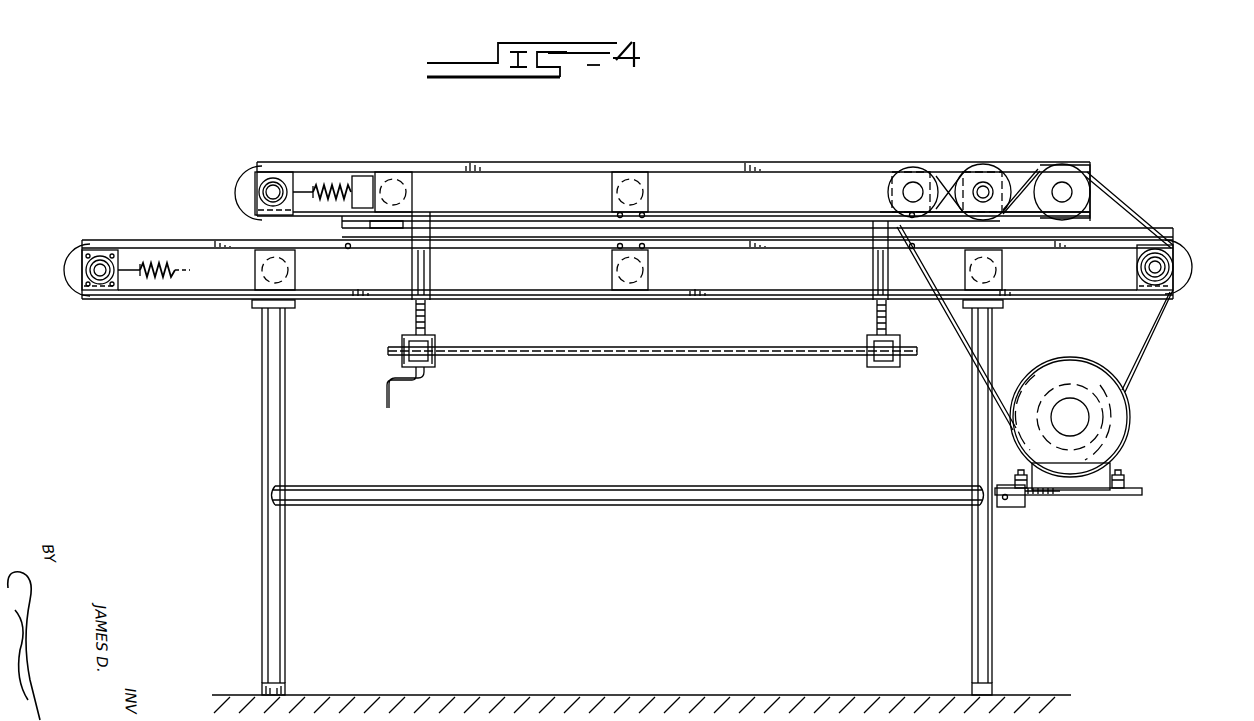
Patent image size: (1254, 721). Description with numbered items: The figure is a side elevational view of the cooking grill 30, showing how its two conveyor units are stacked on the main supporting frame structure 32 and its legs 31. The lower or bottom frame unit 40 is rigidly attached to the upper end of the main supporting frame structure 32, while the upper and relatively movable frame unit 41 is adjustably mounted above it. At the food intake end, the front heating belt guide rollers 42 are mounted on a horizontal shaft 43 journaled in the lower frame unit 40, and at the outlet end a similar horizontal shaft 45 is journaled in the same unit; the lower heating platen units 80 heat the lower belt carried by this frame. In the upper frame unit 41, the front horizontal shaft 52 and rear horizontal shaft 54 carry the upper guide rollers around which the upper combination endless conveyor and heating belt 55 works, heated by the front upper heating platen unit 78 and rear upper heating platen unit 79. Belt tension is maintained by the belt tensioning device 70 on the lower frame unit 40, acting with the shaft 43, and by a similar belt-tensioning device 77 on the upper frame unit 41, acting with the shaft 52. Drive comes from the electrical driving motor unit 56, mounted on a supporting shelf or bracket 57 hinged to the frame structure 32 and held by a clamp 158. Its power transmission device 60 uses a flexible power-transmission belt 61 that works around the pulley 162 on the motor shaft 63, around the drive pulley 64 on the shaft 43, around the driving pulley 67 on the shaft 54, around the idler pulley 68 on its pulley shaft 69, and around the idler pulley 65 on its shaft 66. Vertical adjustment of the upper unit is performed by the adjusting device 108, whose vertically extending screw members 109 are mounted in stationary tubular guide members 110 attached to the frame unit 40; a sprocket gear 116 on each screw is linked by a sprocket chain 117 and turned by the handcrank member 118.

The cooking grill 30 is at (810, 160).
The upper and relatively movable frame unit 41 is at (610, 160).
The front upper heating platen unit 78 is at (517, 217).
The rear upper heating platen unit 79 is at (782, 222).
The upper combination endless conveyor and heating belt 55 is at (340, 222).
The front horizontal shaft 52 is at (273, 190).
The belt-tensioning device 77 is at (333, 183).
The idler pulley 68 is at (904, 167).
The pulley shaft 69 is at (914, 190).
The rear horizontal shaft 54 is at (984, 185).
The driving pulley 67 is at (1000, 176).
The idler pulley 65 is at (1066, 178).
The pulley shaft 66 is at (1064, 195).
The power transmission device 60 is at (1160, 226).
The lower heating platen units 80 is at (537, 256).
The lower or bottom frame unit 40 is at (222, 302).
The horizontal shaft 43 is at (104, 281).
The front heating belt guide rollers 42 is at (76, 275).
The belt tensioning device 70 is at (153, 266).
The drive pulley 64 is at (1162, 268).
The horizontal shaft 45 is at (1158, 280).
The stationary tubular guide member 110 is at (426, 272).
The vertically extending screw member 109 is at (424, 310).
The sprocket gear 116 is at (400, 351).
The adjusting device 108 is at (737, 357).
The sprocket chain 117 is at (818, 357).
The handcrank member 118 is at (395, 395).
The leg 31 is at (260, 404).
The main supporting frame structure 32 is at (268, 503).
The flexible power-transmission belt 61 is at (1148, 340).
The electrical driving motor unit 56 is at (1132, 428).
The motor shaft 63 is at (1072, 418).
The motor pulley 162 is at (1067, 385).
The supporting shelf or bracket 57 is at (1130, 497).
The clamp 158 is at (1007, 508).